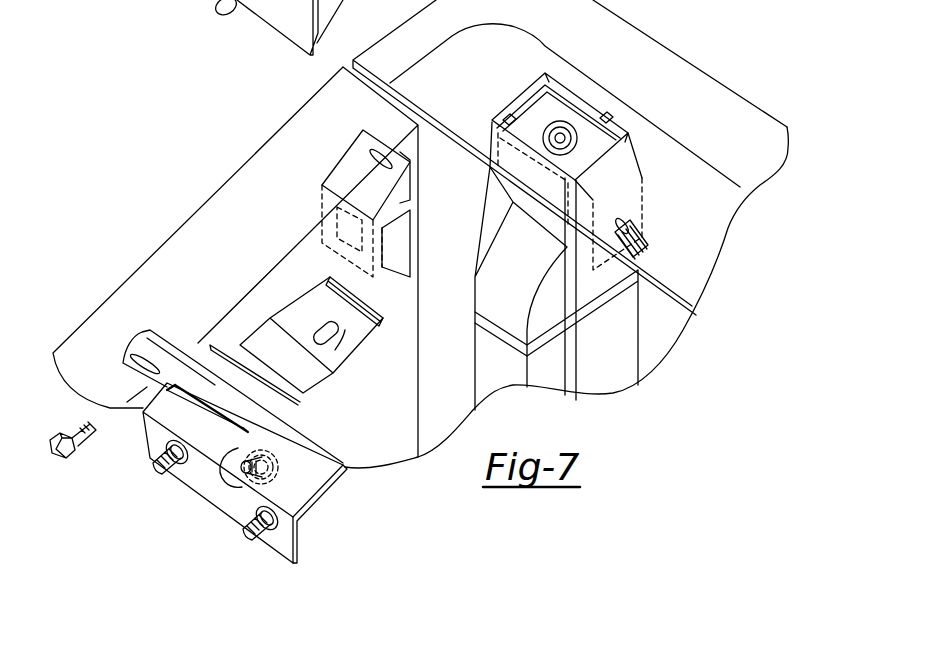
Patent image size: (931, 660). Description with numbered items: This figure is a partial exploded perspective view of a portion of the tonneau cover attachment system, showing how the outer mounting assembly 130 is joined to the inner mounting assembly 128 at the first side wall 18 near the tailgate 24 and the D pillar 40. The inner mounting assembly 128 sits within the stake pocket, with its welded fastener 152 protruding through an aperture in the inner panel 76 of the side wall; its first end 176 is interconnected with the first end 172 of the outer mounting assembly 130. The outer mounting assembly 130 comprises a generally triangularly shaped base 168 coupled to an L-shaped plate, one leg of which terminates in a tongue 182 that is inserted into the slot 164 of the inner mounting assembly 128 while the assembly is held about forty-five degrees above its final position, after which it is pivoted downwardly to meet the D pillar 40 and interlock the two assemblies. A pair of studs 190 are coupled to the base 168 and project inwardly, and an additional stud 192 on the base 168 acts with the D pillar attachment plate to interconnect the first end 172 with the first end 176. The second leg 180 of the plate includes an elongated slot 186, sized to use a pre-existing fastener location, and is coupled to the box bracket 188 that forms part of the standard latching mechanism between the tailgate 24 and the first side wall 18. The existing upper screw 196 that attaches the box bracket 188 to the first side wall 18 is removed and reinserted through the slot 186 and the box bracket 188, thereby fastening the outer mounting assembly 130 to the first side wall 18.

The first side wall 18 is at (709, 90).
The tailgate 24 is at (208, 218).
The D pillar 40 is at (480, 358).
The inner panel 76 is at (617, 313).
The inner mounting assembly 128 is at (510, 58).
The outer mounting assembly 130 is at (267, 295).
The fastener 152 is at (645, 256).
The slot 164 is at (568, 98).
The base 168 is at (337, 483).
The first end 172 is at (340, 516).
The first end 176 is at (690, 182).
The second leg 180 is at (153, 343).
The tongue 182 is at (383, 305).
The elongated slot 186 is at (135, 365).
The box bracket 188 is at (338, 174).
The studs 190 is at (163, 470).
The stud 192 is at (246, 466).
The upper screw 196 is at (50, 430).